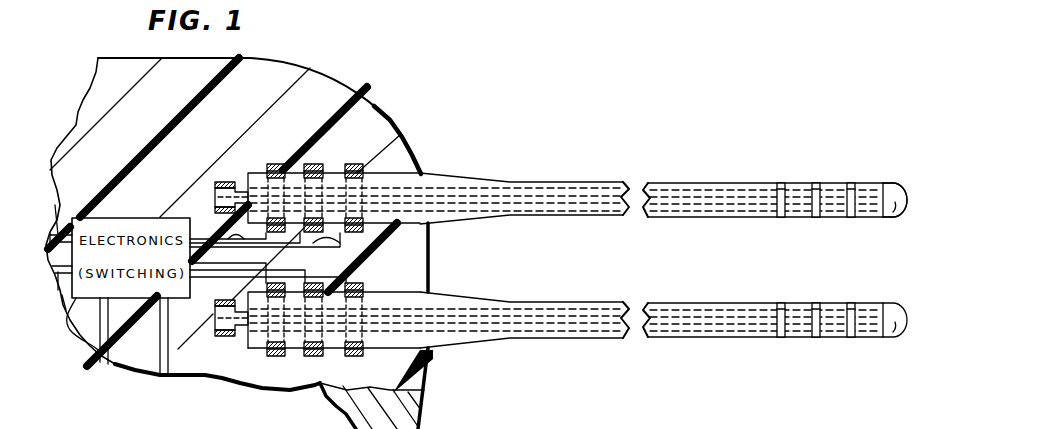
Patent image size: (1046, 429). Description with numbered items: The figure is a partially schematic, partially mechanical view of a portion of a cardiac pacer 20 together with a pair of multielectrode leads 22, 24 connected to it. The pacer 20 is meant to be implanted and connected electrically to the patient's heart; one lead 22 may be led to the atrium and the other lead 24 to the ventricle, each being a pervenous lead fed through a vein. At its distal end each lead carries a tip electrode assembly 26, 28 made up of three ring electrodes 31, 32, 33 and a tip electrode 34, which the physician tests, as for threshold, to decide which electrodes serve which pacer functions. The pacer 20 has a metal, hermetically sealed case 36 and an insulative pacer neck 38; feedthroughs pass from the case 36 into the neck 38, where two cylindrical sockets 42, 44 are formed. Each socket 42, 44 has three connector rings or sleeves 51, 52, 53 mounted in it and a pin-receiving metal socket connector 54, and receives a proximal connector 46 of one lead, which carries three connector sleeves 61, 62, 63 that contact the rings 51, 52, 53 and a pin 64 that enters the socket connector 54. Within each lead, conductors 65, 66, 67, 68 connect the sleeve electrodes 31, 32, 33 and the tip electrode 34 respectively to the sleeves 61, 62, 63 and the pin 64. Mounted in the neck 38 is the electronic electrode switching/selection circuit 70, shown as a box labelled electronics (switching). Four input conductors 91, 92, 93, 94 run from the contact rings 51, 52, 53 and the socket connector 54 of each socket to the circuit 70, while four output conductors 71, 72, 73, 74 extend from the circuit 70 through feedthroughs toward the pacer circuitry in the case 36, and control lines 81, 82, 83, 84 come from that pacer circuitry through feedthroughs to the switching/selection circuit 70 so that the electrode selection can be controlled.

The cardiac pacer 20 is at (489, 127).
The multielectrode lead 22 is at (565, 182).
The multielectrode lead 24 is at (565, 302).
The tip electrode assembly 26 is at (883, 163).
The tip electrode assembly 28 is at (844, 288).
The ring electrode 31 is at (780, 185).
The ring electrode 32 is at (817, 185).
The ring electrode 33 is at (852, 208).
The tip electrode 34 is at (900, 190).
The hermetically sealed case 36 is at (424, 408).
The pacer neck 38 is at (373, 108).
The socket 42 is at (424, 176).
The socket 44 is at (418, 348).
The proximal connector 46 is at (420, 292).
The connector ring 51 is at (356, 165).
The connector ring 52 is at (313, 164).
The connector ring 53 is at (277, 164).
The socket connector 54 is at (216, 196).
The connector sleeve 61 is at (365, 212).
The connector sleeve 62 is at (314, 220).
The connector sleeve 63 is at (268, 215).
The pin 64 is at (213, 184).
The conductor 65 is at (663, 188).
The conductor 66 is at (690, 197).
The conductor 67 is at (677, 208).
The conductor 68 is at (710, 210).
The electronic electrode switching/selection circuit 70 is at (72, 330).
The output conductor 71 is at (50, 232).
The output conductor 72 is at (57, 205).
The output conductor 73 is at (58, 272).
The output conductor 74 is at (62, 295).
The control line 81 is at (95, 352).
The control line 82 is at (115, 372).
The control line 83 is at (162, 374).
The control line 84 is at (172, 374).
The input conductor 91 is at (378, 240).
The input conductor 92 is at (374, 262).
The input conductor 93 is at (216, 296).
The input conductor 94 is at (214, 205).